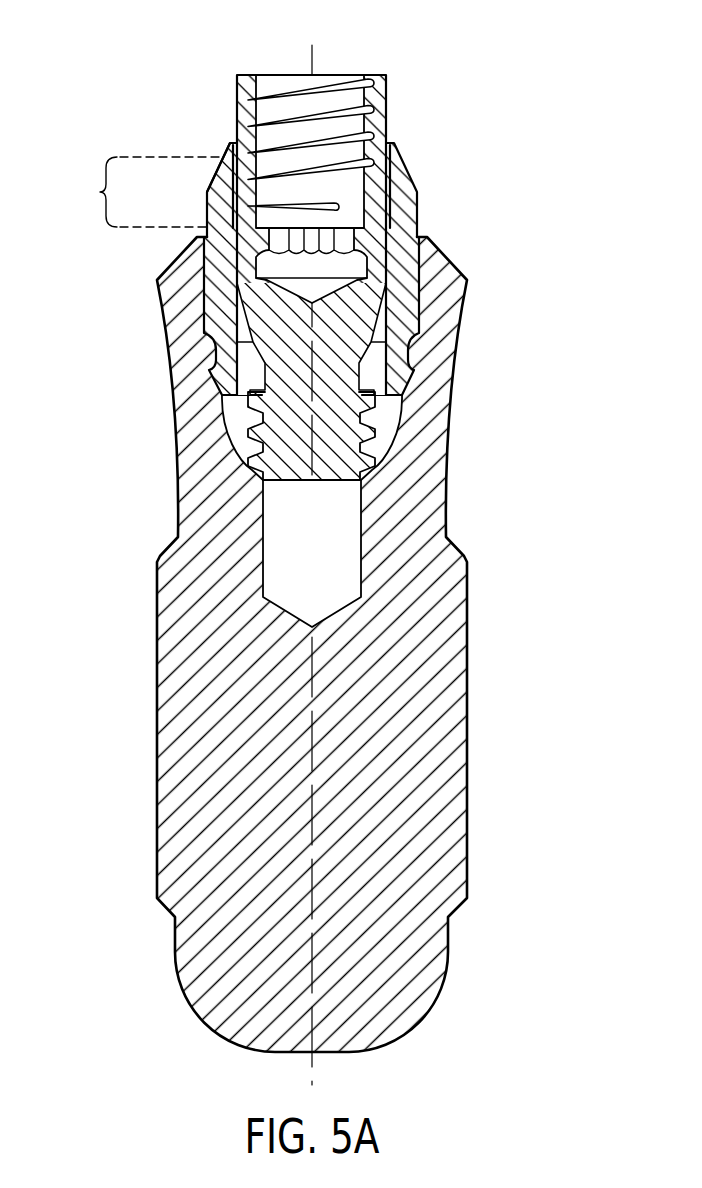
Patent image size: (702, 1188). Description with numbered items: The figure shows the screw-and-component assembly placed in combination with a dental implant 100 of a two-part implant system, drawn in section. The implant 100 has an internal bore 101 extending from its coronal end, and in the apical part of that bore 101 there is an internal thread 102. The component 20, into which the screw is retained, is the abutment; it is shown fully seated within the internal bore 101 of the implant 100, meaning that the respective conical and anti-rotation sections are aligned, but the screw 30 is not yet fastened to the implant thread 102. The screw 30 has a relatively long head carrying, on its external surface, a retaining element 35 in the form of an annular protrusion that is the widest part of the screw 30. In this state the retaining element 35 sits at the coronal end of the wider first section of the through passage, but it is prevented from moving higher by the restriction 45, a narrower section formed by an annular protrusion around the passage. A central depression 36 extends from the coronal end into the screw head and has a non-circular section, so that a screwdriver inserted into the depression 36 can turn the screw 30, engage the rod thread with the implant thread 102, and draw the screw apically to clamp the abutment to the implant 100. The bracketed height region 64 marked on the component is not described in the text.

The dental implant 100 is at (175, 446).
The internal bore 101 is at (390, 413).
The internal thread 102 is at (390, 519).
The abutment 20 is at (417, 210).
The screw 30 is at (386, 105).
The retaining element 35 is at (403, 157).
The central depression 36 is at (351, 76).
The restriction 45 is at (227, 150).
The height region 64 is at (145, 192).